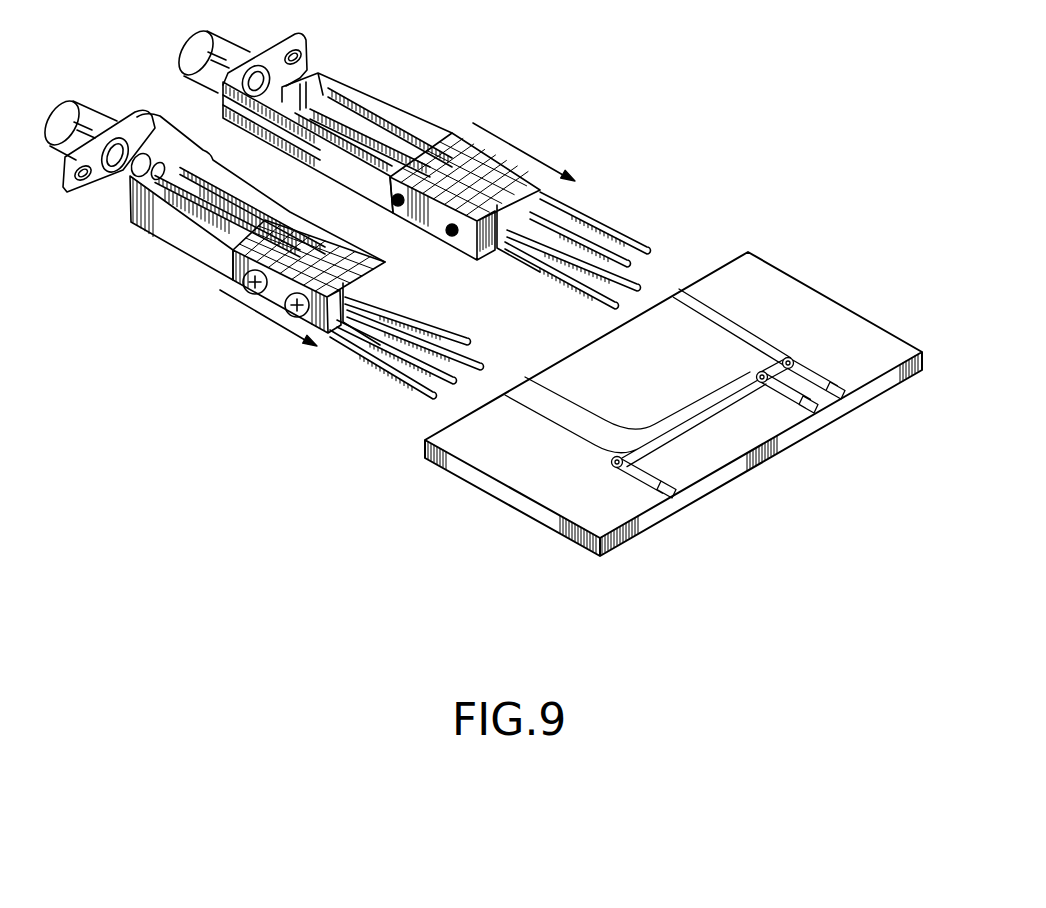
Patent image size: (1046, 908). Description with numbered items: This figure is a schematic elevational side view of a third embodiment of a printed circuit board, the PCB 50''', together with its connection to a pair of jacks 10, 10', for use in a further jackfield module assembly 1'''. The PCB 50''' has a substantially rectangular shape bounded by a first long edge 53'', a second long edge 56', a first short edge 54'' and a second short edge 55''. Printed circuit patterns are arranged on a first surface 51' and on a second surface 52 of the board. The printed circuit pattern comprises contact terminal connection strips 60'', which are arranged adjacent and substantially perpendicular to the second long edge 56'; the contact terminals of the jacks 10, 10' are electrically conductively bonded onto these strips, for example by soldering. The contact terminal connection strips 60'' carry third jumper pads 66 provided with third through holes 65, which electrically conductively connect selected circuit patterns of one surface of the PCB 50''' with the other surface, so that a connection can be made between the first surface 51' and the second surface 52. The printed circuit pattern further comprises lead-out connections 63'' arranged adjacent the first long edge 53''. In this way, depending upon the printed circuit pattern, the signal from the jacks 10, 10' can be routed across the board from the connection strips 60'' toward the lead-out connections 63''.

The jackfield module assembly 1''' is at (708, 78).
The jack 10 is at (418, 83).
The jack 10' is at (261, 247).
The PCB 50''' is at (623, 408).
The first surface 51' is at (696, 525).
The second surface 52 is at (572, 545).
The first long edge 53'' is at (805, 481).
The first short edge 54'' is at (480, 523).
The second short edge 55'' is at (884, 276).
The second long edge 56' is at (718, 239).
The contact terminal connection strips 60'' is at (669, 344).
The lead-out connections 63'' is at (766, 428).
The third through holes 65 is at (707, 410).
The third jumper pads 66 is at (793, 362).